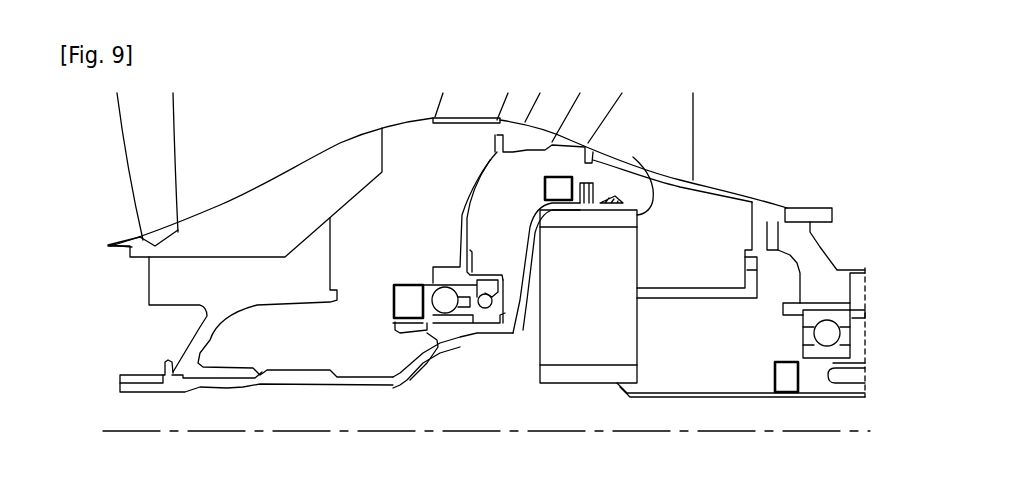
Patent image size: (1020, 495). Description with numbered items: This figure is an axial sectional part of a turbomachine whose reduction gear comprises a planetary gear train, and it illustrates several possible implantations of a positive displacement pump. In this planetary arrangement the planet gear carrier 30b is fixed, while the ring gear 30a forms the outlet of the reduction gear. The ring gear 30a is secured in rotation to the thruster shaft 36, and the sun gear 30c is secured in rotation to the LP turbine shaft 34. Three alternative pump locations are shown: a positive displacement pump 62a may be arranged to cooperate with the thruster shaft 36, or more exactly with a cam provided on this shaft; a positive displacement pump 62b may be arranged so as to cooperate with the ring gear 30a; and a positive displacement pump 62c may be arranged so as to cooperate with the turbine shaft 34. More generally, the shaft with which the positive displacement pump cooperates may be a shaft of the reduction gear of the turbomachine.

The ring gear 30a is at (653, 188).
The planet gear carrier 30b is at (655, 285).
The sun gear 30c is at (561, 370).
The LP turbine shaft 34 is at (716, 392).
The thruster shaft 36 is at (460, 347).
The positive displacement pump 62a is at (410, 305).
The positive displacement pump 62b is at (557, 188).
The positive displacement pump 62c is at (784, 384).